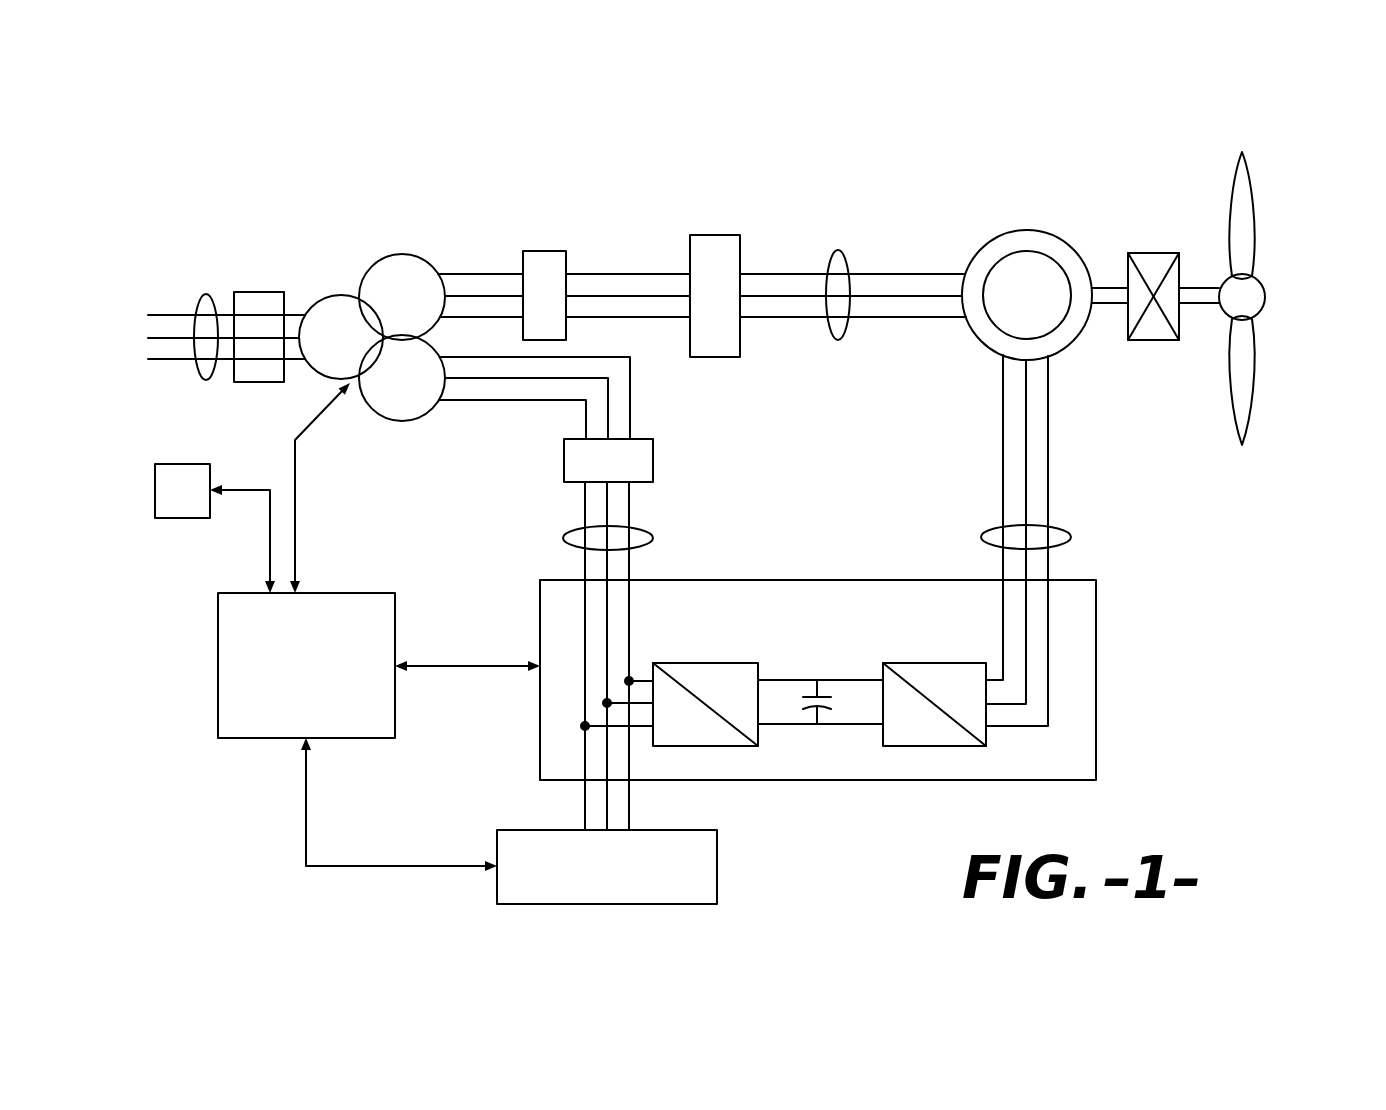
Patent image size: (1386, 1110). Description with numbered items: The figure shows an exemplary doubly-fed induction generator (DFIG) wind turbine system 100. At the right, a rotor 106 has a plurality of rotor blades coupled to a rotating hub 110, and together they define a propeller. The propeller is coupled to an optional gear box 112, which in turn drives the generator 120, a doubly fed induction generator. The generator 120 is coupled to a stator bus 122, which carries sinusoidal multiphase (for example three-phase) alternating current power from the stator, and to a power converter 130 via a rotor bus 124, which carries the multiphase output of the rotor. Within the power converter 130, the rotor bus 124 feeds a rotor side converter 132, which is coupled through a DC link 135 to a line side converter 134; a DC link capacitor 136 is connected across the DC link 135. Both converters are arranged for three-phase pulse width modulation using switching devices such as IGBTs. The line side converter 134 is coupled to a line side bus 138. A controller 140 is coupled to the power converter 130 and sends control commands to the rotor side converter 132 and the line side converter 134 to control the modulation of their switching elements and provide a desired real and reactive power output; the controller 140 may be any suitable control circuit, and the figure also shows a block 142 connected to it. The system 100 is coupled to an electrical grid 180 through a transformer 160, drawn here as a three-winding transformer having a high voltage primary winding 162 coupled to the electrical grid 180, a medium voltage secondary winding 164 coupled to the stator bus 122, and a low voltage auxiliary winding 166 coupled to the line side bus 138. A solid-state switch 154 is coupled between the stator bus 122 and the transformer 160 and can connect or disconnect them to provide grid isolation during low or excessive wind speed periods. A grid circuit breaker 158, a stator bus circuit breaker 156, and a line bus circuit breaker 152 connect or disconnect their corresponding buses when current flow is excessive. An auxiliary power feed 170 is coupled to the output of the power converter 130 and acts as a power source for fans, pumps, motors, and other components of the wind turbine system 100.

The DFIG wind turbine system 100 is at (968, 162).
The rotor 106 is at (1295, 301).
The rotating hub 110 is at (1265, 292).
The gear box 112 is at (1155, 253).
The generator 120 is at (1022, 230).
The stator bus 122 is at (838, 250).
The rotor bus 124 is at (1072, 537).
The power converter 130 is at (852, 700).
The rotor side converter 132 is at (940, 746).
The line side converter 134 is at (712, 746).
The DC link 135 is at (780, 680).
The DC link capacitor 136 is at (832, 704).
The line side bus 138 is at (650, 543).
The controller 140 is at (347, 593).
The sensor 142 is at (190, 464).
The line bus circuit breaker 152 is at (653, 468).
The solid-state switch 154 is at (715, 235).
The stator bus circuit breaker 156 is at (541, 251).
The grid circuit breaker 158 is at (257, 292).
The transformer 160 is at (464, 302).
The primary winding 162 is at (313, 300).
The secondary winding 164 is at (400, 254).
The auxiliary winding 166 is at (410, 421).
The auxiliary power feed 170 is at (555, 830).
The electrical grid 180 is at (205, 294).